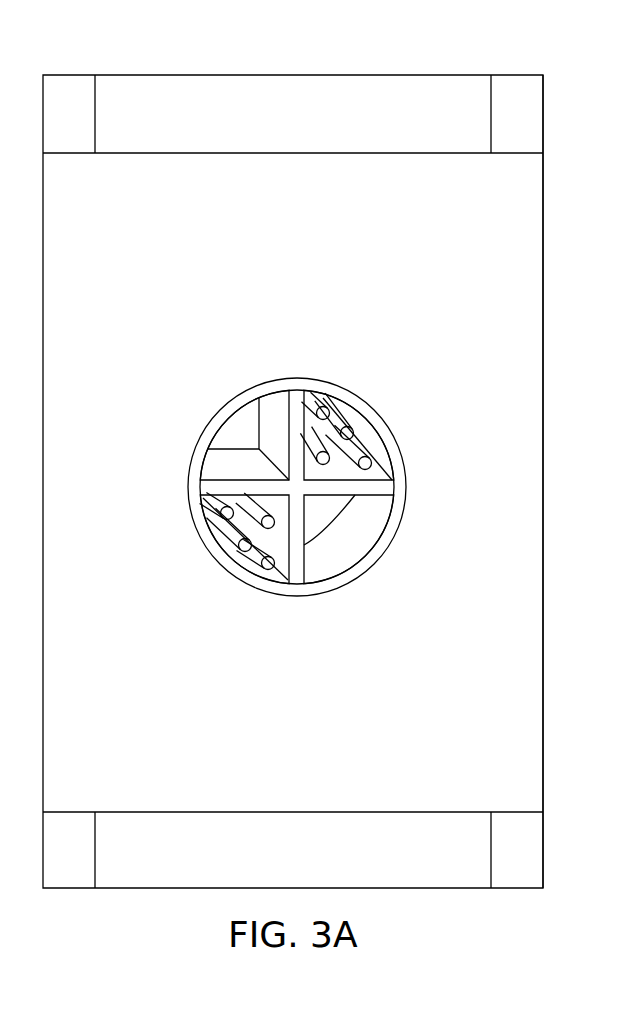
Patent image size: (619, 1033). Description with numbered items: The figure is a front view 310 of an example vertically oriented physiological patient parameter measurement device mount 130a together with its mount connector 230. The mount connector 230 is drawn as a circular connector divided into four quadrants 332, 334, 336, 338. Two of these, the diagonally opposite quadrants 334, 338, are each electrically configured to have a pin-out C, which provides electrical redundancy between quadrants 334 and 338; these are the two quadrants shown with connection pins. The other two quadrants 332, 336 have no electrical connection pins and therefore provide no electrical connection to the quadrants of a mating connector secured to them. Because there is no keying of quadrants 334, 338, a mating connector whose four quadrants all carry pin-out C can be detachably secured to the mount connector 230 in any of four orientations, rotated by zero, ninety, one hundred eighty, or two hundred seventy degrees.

The front view 310 is at (336, 55).
The vertically oriented physiological patient parameter measurement device mount 130a is at (545, 112).
The mount connector 230 is at (295, 378).
The quadrant 332 is at (255, 417).
The quadrant 334 is at (235, 558).
The quadrant 336 is at (349, 542).
The quadrant 338 is at (343, 415).